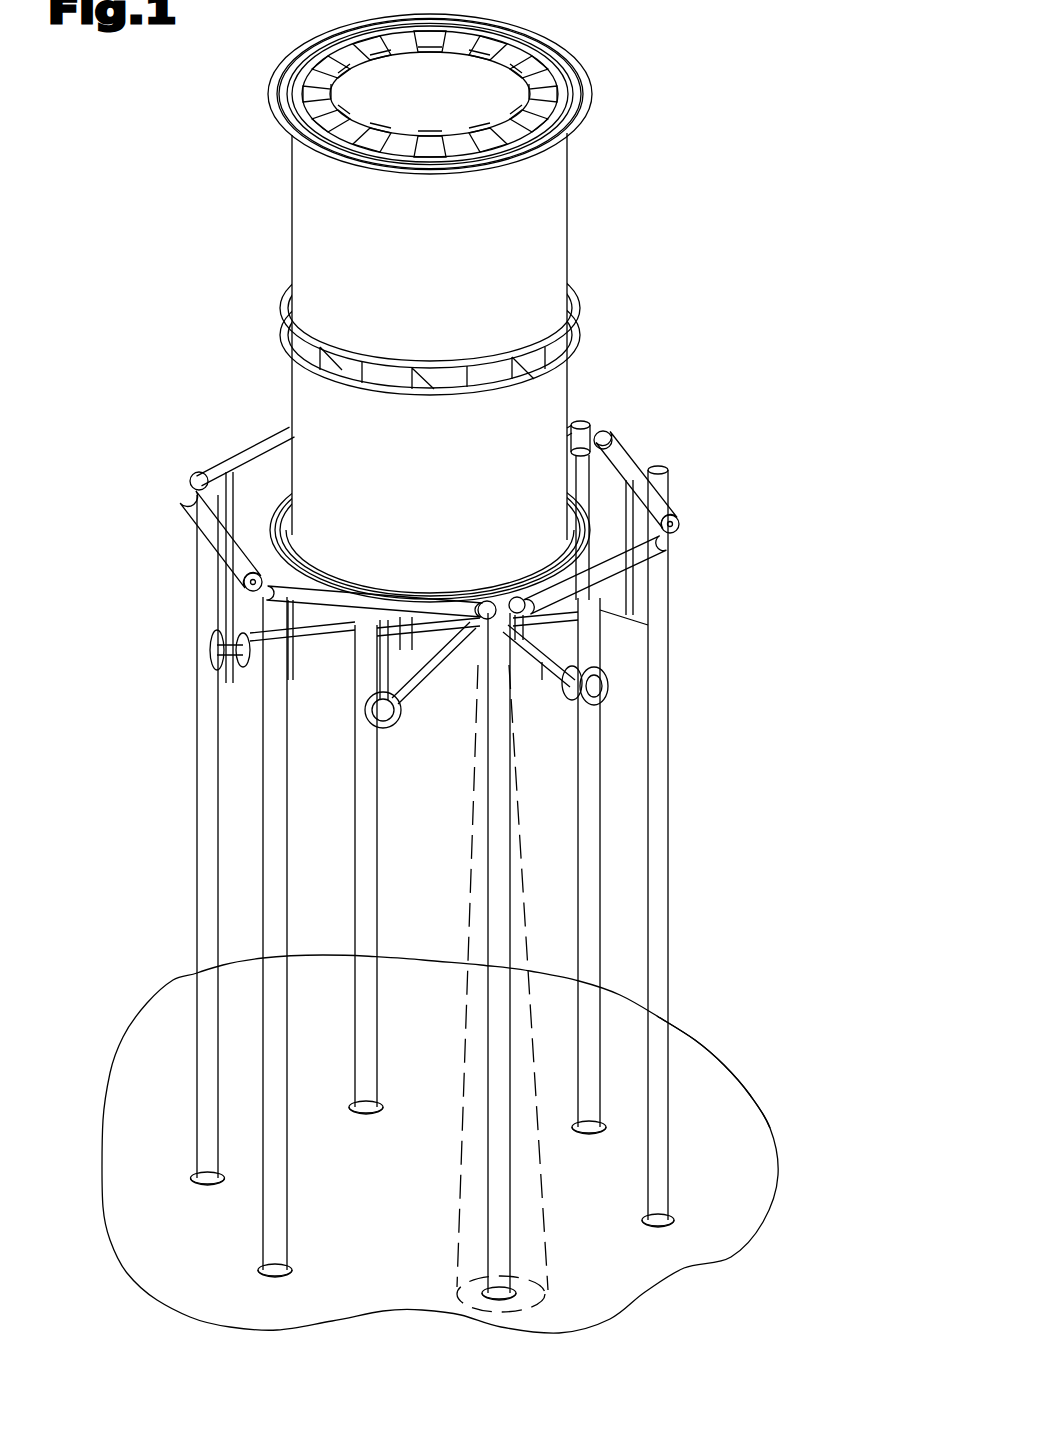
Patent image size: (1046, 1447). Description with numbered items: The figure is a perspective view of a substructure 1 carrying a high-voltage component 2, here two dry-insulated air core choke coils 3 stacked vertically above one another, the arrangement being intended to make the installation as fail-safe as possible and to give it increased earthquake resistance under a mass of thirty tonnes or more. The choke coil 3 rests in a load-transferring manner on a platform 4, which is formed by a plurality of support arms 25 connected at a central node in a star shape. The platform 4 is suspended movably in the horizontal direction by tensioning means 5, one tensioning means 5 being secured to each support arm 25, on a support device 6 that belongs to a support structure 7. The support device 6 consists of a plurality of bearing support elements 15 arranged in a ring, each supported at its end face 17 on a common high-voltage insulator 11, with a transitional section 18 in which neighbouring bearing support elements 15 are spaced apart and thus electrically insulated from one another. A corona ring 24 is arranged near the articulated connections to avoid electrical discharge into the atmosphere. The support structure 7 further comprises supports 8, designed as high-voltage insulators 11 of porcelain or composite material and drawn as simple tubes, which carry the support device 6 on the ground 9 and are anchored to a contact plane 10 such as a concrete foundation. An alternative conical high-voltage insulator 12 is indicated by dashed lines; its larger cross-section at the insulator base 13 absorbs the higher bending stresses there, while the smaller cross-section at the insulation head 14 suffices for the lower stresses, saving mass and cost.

The substructure 1 is at (699, 743).
The high-voltage component 2 is at (695, 163).
The choke coil 3 is at (305, 228).
The platform 4 is at (528, 684).
The tensioning means 5 is at (585, 632).
The support device 6 is at (672, 478).
The support structure 7 is at (739, 594).
The supports 8 is at (657, 578).
The ground 9 is at (741, 1142).
The contact plane 10 is at (721, 1102).
The high-voltage insulator 11 is at (657, 860).
The conical high-voltage insulator 12 is at (460, 1214).
The insulator base 13 is at (444, 1289).
The insulation head 14 is at (481, 634).
The bearing support elements 15 is at (623, 453).
The end face 17 is at (695, 535).
The transitional section 18 is at (603, 411).
The corona ring 24 is at (608, 688).
The support arms 25 is at (542, 672).